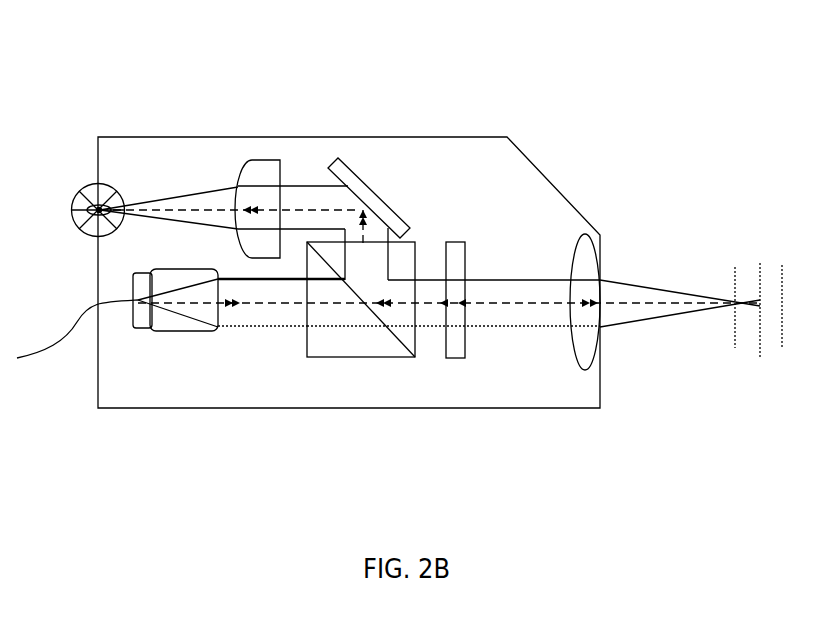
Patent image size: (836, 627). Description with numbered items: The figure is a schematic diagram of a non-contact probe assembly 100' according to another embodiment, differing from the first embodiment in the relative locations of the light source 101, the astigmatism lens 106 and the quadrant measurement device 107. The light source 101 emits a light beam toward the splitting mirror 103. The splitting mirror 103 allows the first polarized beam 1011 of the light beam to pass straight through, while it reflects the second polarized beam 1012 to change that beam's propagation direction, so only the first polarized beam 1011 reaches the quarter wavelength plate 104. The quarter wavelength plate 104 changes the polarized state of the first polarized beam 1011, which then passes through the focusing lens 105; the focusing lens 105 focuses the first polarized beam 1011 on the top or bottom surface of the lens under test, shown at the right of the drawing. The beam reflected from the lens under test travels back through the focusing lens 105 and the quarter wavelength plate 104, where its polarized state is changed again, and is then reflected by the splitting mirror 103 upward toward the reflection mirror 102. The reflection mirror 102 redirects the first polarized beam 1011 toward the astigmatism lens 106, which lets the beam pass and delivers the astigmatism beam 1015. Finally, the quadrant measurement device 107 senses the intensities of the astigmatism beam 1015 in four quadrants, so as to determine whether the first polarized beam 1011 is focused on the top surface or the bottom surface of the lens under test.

The first non-contact probe assembly 100' is at (349, 221).
The light source 101 is at (163, 320).
The first polarized beam 1011 is at (518, 312).
The second polarized beam 1012 is at (248, 315).
The astigmatism beam 1015 is at (206, 205).
The reflection mirror 102 is at (352, 178).
The splitting mirror 103 is at (365, 348).
The quarter wavelength plate 104 is at (457, 350).
The focusing lens 105 is at (590, 358).
The astigmatism lens 106 is at (262, 175).
The quadrant measurement device 107 is at (98, 192).